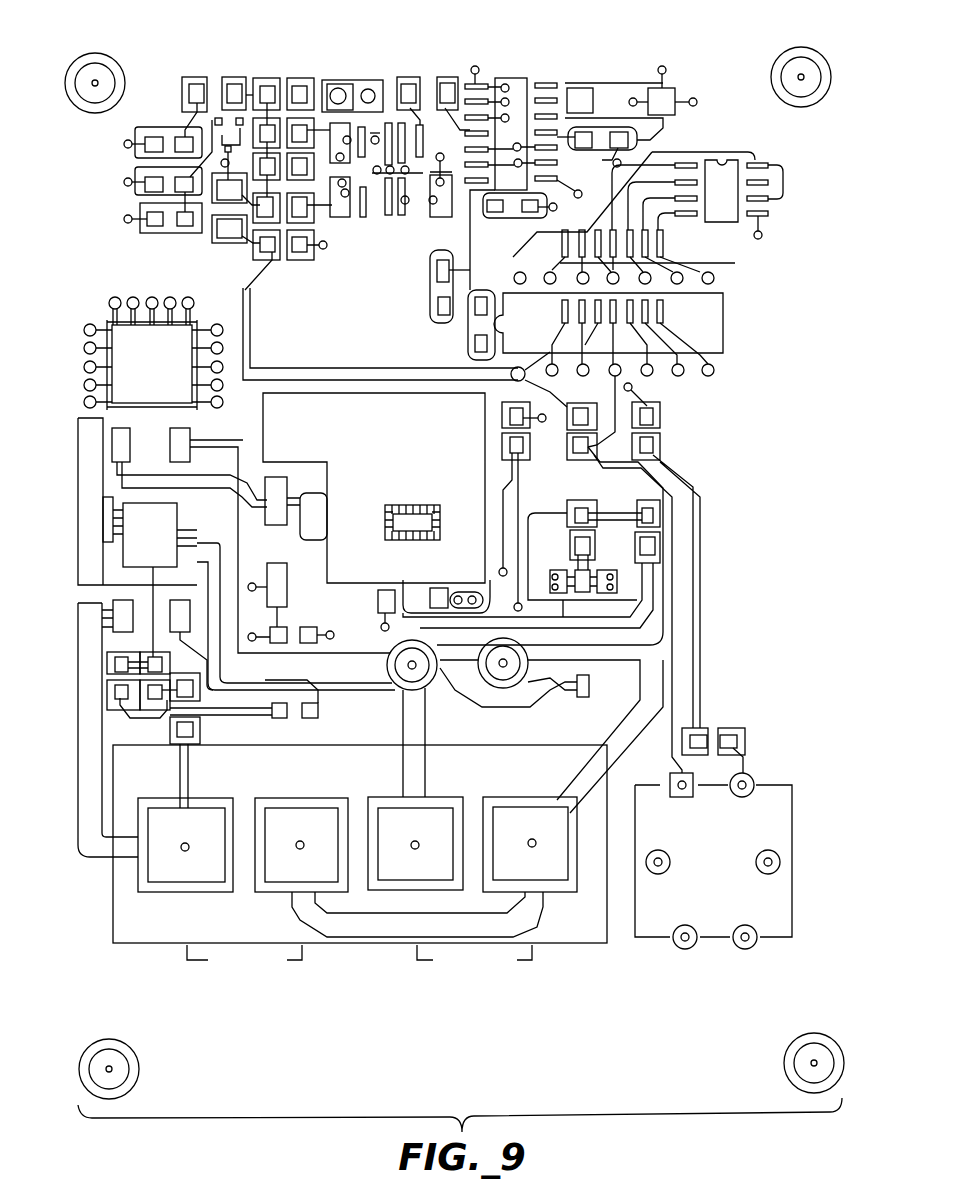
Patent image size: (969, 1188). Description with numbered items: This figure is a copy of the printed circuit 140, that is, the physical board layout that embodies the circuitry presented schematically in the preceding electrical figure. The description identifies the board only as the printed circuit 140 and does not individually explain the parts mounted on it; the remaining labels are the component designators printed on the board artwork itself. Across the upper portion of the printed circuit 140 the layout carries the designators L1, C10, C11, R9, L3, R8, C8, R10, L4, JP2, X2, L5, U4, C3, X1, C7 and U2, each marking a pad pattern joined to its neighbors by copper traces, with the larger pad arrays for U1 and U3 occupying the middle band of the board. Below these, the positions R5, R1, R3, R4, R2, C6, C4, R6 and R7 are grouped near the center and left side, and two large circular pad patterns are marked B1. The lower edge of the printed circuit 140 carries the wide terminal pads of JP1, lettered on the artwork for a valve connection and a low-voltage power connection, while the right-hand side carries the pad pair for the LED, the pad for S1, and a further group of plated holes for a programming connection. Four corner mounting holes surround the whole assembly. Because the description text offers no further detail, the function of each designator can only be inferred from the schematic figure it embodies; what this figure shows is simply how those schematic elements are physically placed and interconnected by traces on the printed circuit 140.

The printed circuit 140 is at (454, 566).
The inductor L1 is at (217, 94).
The capacitor C10 is at (143, 142).
The capacitor C11 is at (164, 156).
The resistor R9 is at (148, 212).
The inductor L3 is at (236, 206).
The resistor R8 is at (267, 147).
The capacitor C8 is at (380, 316).
The resistor R10 is at (308, 115).
The inductor L4 is at (314, 226).
The jumper JP2 is at (353, 83).
The crystal X2 is at (391, 183).
The inductor L5 is at (433, 89).
The integrated circuit U4 is at (523, 171).
The capacitor C3 is at (518, 218).
The crystal X1 is at (631, 102).
The capacitor C7 is at (629, 147).
The integrated circuit U2 is at (697, 183).
The integrated circuit U1 is at (614, 279).
The capacitor C6 is at (462, 294).
The integrated circuit U3 is at (150, 352).
The capacitor C4 is at (151, 663).
The resistor R6 is at (138, 713).
The resistor R7 is at (171, 740).
The resistor R5 is at (523, 506).
The resistor R1 is at (559, 574).
The resistor R3 is at (659, 555).
The resistor R4 is at (594, 558).
The resistor R2 is at (546, 575).
The buzzer B1 is at (525, 725).
The connector JP1 is at (360, 872).
The light emitting diode LED is at (711, 726).
The switch S1 is at (660, 778).